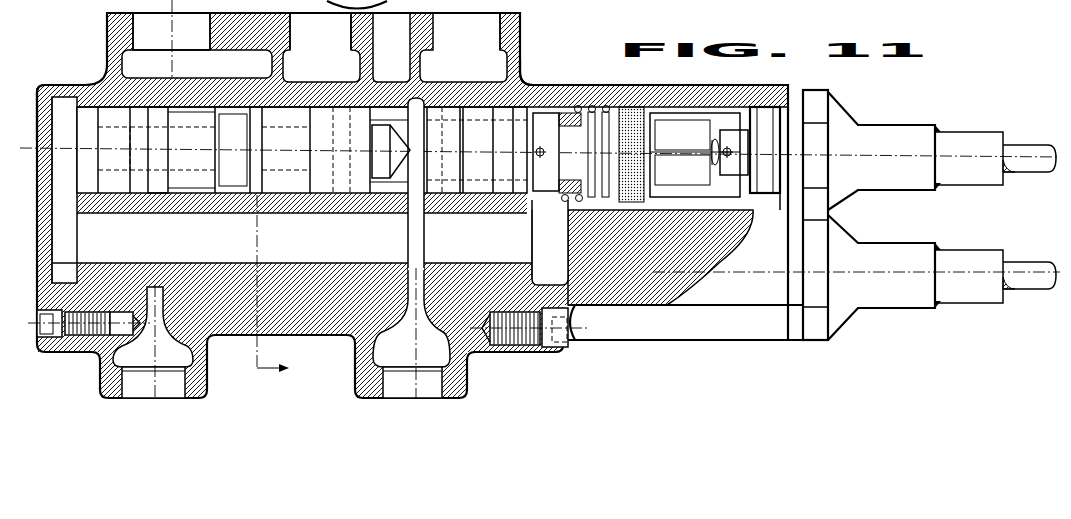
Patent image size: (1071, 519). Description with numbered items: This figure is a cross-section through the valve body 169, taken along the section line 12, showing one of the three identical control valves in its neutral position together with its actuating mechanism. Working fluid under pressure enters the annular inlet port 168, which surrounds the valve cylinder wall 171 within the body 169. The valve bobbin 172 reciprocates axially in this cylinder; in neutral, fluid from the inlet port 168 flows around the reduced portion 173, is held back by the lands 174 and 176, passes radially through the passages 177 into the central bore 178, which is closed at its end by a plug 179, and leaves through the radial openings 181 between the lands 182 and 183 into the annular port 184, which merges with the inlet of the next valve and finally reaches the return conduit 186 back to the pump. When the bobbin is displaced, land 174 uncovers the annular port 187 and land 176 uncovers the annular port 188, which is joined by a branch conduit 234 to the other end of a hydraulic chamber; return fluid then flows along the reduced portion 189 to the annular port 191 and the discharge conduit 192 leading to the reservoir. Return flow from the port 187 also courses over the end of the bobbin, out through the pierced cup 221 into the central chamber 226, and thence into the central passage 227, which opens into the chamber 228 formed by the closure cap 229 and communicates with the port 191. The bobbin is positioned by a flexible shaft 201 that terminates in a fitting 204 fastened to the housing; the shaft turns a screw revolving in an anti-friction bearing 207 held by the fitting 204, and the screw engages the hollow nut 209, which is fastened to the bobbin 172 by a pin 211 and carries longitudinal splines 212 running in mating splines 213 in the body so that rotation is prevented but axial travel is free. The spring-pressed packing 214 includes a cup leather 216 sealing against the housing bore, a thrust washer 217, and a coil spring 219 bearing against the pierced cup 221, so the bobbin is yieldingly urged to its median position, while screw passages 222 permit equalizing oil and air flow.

The section line 12 is at (219, 192).
The inlet port 168 is at (424, 103).
The valve body 169 is at (521, 74).
The valve cylinder wall 171 is at (414, 121).
The valve bobbin 172 is at (440, 204).
The reduced portion 173 is at (392, 204).
The land 174 is at (492, 204).
The land 176 is at (352, 204).
The radial passage 177 is at (386, 163).
The central bore 178 is at (296, 204).
The plug 179 is at (116, 204).
The radial opening 181 is at (162, 204).
The land 182 is at (210, 204).
The land 183 is at (140, 204).
The annular port 184 is at (190, 204).
The return conduit 186 is at (137, 374).
The annular port 187 is at (498, 98).
The annular port 188 is at (342, 104).
The reduced portion 189 is at (314, 204).
The annular port 191 is at (252, 112).
The discharge conduit 192 is at (148, 28).
The flexible shaft 201 is at (1035, 142).
The fitting 204 is at (840, 121).
The anti-friction bearing 207 is at (763, 118).
The hollow nut 209 is at (598, 112).
The pin 211 is at (544, 152).
The longitudinal spline 212 is at (695, 155).
The mating spline 213 is at (740, 236).
The spring-pressed packing 214 is at (631, 108).
The cup leather 216 is at (656, 108).
The thrust washer 217 is at (682, 170).
The coil spring 219 is at (570, 208).
The pierced cup 221 is at (558, 105).
The screw passage 222 is at (713, 163).
The central chamber 226 is at (537, 253).
The central passage 227 is at (92, 250).
The chamber 228 is at (63, 228).
The closure cap 229 is at (60, 87).
The branch conduit 234 is at (310, 44).